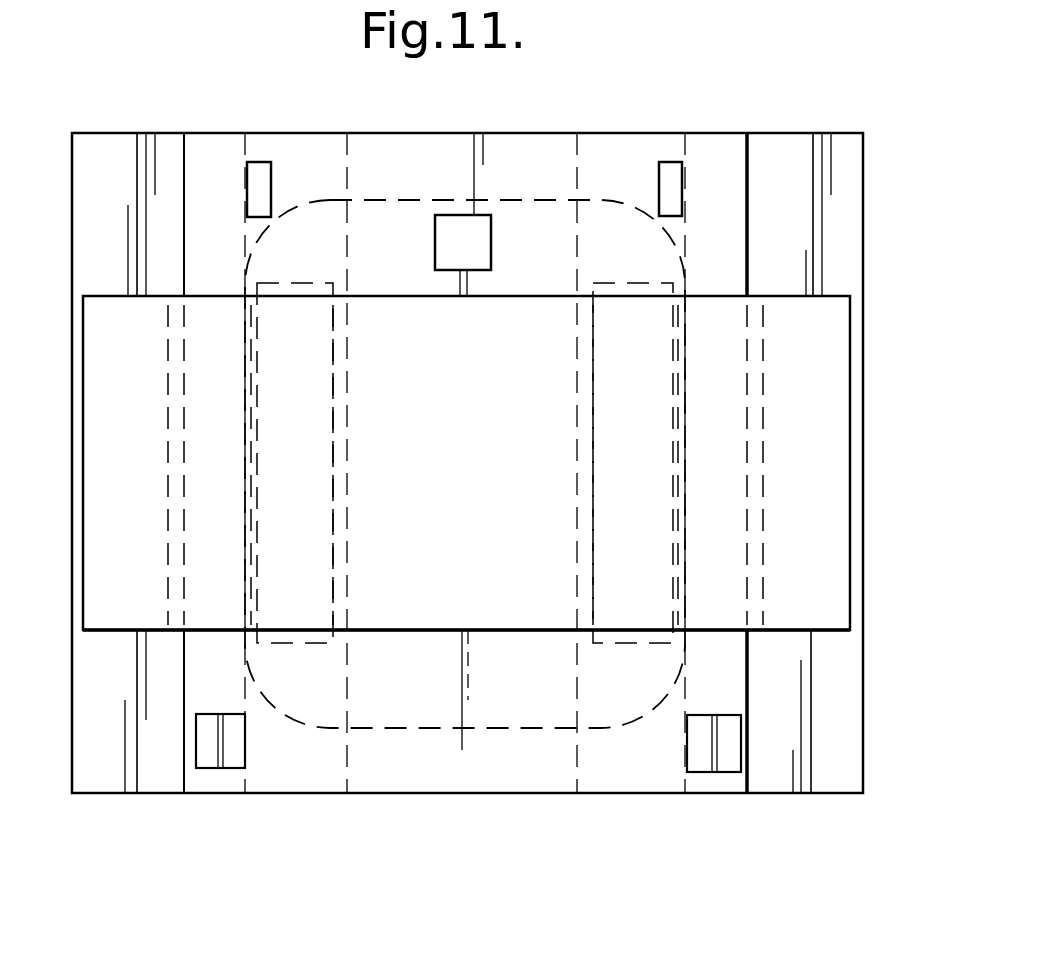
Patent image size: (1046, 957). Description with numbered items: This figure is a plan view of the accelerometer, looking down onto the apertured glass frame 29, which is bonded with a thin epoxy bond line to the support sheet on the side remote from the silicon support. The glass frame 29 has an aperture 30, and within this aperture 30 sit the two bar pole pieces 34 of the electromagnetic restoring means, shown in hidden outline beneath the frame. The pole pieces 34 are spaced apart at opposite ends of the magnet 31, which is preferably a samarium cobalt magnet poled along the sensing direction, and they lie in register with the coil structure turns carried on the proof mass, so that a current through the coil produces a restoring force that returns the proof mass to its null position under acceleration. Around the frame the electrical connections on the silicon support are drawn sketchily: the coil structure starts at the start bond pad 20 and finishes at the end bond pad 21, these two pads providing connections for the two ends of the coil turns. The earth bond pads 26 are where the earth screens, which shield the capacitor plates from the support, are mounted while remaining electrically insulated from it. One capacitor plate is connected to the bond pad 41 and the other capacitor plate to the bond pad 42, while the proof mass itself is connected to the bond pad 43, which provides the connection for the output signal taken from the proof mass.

The start bond pad 20 is at (465, 232).
The end bond pad 21 is at (672, 172).
The earth bond pads 26 is at (233, 760).
The apertured glass frame 29 is at (850, 178).
The aperture 30 is at (474, 785).
The magnet 31 is at (510, 458).
The bar pole pieces 34 is at (292, 460).
The bond pad 41 is at (728, 762).
The bond pad 42 is at (207, 760).
The bond pad 43 is at (260, 170).